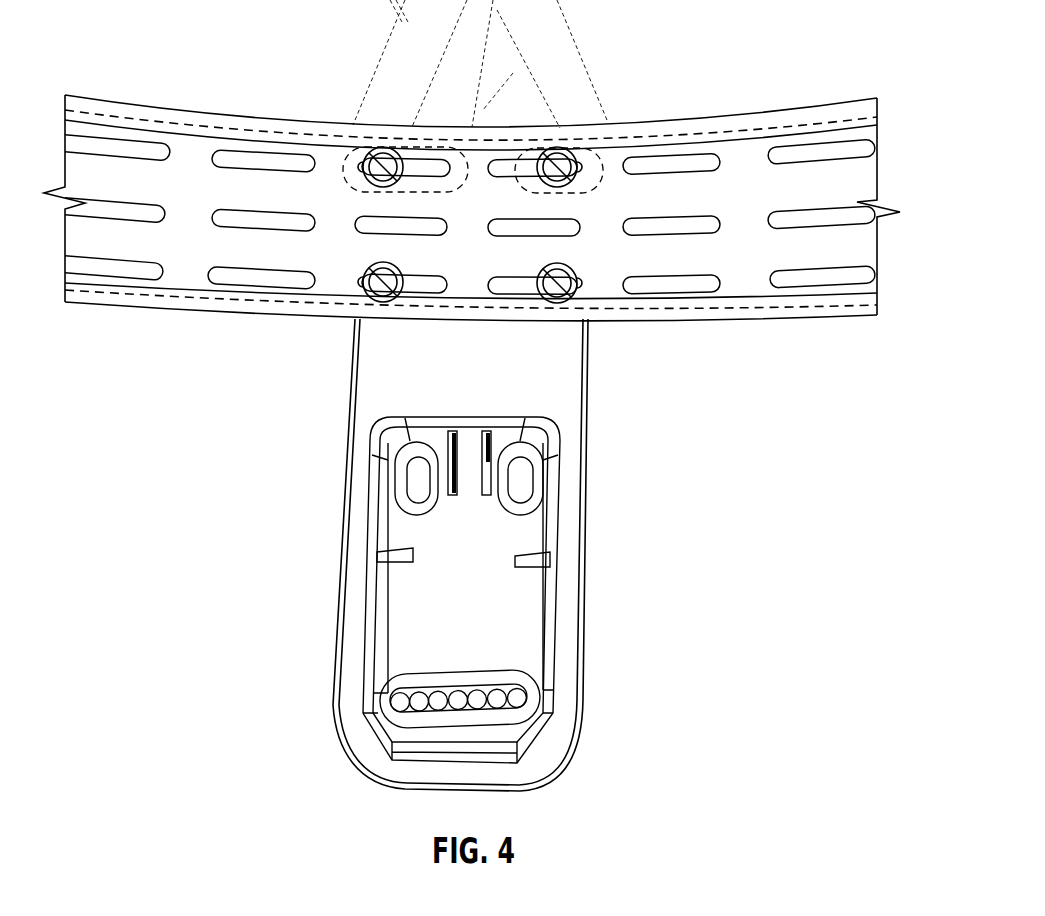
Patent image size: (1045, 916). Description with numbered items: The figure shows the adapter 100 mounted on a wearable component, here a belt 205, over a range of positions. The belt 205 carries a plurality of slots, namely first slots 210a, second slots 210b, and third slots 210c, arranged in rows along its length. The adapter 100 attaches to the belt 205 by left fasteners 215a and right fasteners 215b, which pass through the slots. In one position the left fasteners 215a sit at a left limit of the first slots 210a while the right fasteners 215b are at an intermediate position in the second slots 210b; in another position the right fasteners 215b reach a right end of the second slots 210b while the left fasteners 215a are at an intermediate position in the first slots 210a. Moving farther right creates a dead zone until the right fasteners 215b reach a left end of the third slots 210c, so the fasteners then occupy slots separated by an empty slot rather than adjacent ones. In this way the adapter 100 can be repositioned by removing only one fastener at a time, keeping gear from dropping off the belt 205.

The adapter 100 is at (372, 523).
The belt 205 is at (847, 104).
The first slots 210a is at (345, 285).
The second slots 210b is at (600, 285).
The third slots 210c is at (696, 283).
The left fasteners 215a is at (387, 186).
The right fasteners 215b is at (558, 187).